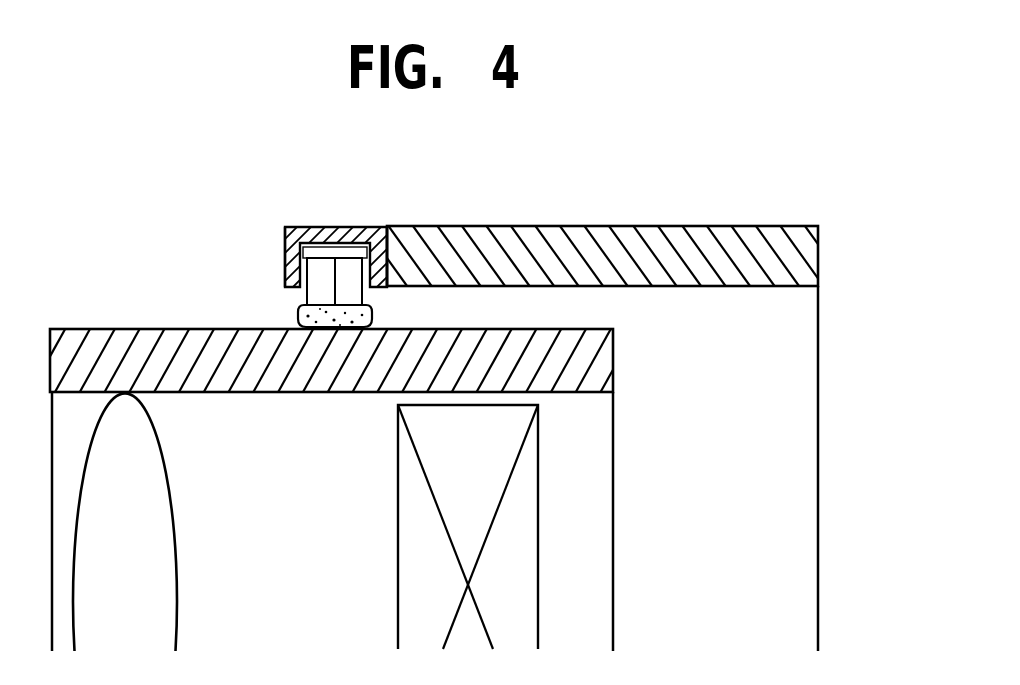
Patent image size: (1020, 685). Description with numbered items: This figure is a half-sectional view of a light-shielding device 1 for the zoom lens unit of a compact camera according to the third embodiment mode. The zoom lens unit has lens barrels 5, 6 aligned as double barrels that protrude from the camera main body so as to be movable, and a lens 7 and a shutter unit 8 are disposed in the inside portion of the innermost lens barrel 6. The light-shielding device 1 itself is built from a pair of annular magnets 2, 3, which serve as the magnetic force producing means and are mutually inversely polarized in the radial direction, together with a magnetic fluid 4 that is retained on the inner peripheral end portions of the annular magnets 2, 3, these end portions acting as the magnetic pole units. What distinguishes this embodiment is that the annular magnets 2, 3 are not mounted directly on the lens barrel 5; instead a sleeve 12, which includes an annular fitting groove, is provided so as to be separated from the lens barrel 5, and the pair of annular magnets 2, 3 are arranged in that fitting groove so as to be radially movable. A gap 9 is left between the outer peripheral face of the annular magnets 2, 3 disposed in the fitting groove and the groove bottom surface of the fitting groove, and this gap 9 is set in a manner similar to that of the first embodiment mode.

The light-shielding device 1 is at (350, 228).
The annular magnet 2 is at (303, 227).
The annular magnet 3 is at (385, 226).
The magnetic fluid 4 is at (372, 318).
The lens barrel 5 is at (497, 235).
The lens barrel 6 is at (123, 330).
The lens 7 is at (155, 500).
The shutter unit 8 is at (410, 562).
The gap 9 is at (323, 226).
The sleeve 12 is at (284, 250).